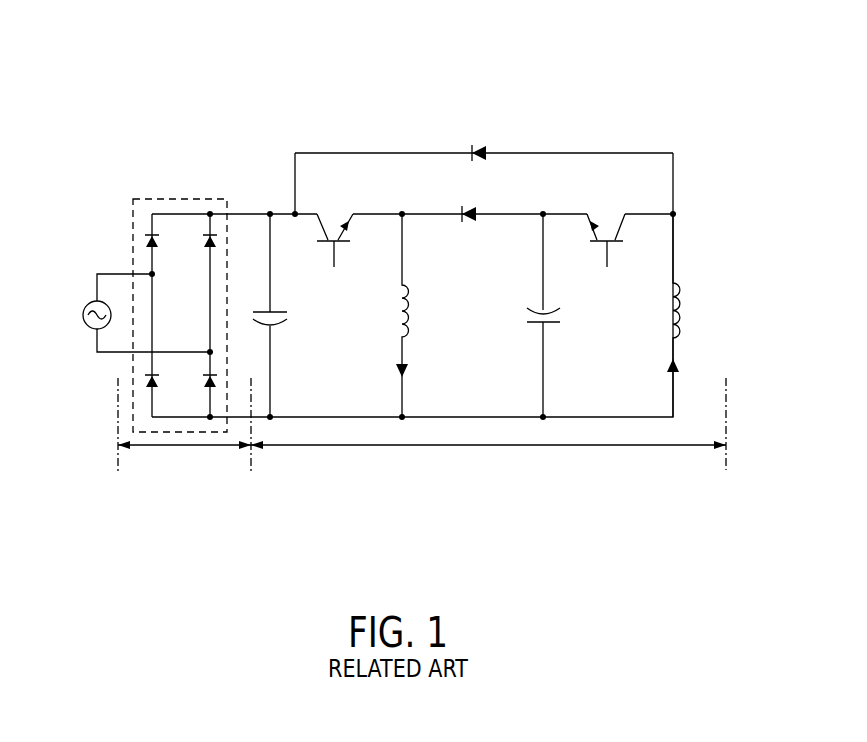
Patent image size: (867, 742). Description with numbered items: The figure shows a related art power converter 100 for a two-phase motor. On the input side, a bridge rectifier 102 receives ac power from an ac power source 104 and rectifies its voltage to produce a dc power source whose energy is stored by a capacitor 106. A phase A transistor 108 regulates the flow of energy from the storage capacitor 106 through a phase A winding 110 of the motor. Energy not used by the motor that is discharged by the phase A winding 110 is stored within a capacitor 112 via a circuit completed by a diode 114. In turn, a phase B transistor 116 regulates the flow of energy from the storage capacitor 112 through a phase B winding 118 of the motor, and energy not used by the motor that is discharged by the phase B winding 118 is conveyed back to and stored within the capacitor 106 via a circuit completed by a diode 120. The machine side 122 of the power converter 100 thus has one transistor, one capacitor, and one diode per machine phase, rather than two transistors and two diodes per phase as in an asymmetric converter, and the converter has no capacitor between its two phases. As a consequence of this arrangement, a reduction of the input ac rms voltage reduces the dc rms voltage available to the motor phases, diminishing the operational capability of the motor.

The power converter 100 is at (578, 88).
The bridge rectifier 102 is at (180, 199).
The ac power source 104 is at (96, 331).
The capacitor 106 is at (283, 308).
The phase A transistor 108 is at (349, 226).
The phase A winding 110 is at (413, 305).
The capacitor 112 is at (537, 325).
The diode 114 is at (467, 222).
The phase B transistor 116 is at (623, 228).
The phase B winding 118 is at (683, 288).
The diode 120 is at (484, 158).
The machine side 122 is at (297, 448).